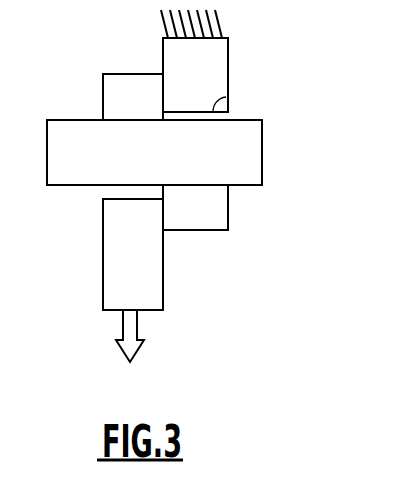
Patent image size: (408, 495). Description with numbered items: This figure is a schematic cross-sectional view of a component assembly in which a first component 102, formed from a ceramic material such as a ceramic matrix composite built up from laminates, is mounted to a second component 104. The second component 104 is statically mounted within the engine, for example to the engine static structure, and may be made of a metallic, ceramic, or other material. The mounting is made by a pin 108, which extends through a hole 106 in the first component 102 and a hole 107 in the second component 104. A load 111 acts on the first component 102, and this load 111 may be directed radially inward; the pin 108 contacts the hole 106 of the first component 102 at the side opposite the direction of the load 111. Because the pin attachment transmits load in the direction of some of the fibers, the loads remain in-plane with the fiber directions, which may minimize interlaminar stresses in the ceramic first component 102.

The first component 102 is at (137, 83).
The second component 104 is at (215, 62).
The hole 106 is at (117, 200).
The hole 107 is at (226, 97).
The pin 108 is at (245, 158).
The load 111 is at (138, 352).